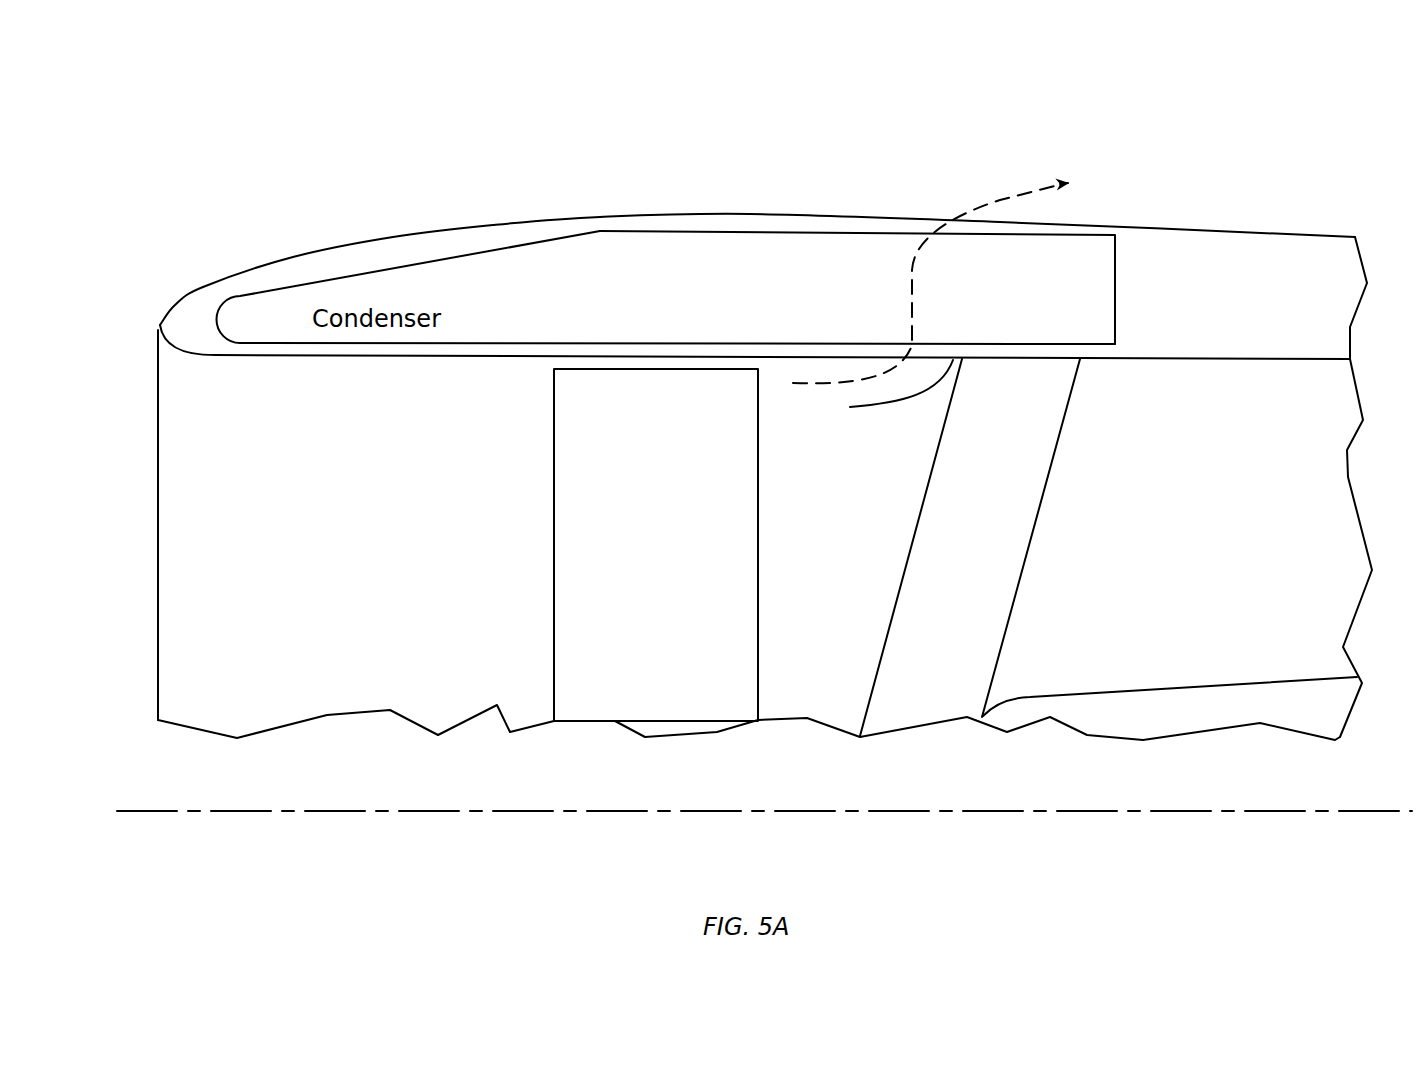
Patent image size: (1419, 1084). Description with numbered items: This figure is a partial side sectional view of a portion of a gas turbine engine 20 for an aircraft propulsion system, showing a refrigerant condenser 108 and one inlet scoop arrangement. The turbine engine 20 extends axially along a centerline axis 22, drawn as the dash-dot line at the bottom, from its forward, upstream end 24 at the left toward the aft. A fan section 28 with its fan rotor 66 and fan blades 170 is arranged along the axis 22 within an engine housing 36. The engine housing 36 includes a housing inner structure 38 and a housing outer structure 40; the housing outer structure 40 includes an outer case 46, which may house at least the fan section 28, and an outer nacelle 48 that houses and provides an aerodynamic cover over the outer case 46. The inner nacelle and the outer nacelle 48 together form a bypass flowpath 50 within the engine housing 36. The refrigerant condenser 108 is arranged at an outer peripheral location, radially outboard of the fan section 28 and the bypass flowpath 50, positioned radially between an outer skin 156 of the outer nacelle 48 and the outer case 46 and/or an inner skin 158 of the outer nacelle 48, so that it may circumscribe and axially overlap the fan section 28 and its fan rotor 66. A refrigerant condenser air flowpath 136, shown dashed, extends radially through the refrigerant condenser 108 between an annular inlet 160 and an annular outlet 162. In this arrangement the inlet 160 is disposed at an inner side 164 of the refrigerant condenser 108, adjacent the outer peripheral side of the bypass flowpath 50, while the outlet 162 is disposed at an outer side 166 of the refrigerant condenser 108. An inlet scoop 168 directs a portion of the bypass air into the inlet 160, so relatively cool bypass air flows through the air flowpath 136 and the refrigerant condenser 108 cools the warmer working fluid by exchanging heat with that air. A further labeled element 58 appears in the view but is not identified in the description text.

The gas turbine engine 20 is at (233, 130).
The centerline axis 22 is at (127, 812).
The forward, upstream end 24 is at (158, 325).
The fan section 28 is at (495, 497).
The engine housing 36 is at (1378, 153).
The housing inner structure 38 is at (1313, 230).
The housing outer structure 40 is at (1327, 670).
The outer case 46 is at (637, 343).
The outer nacelle 48 is at (1230, 222).
The bypass flowpath 50 is at (1161, 570).
The inlet 58 is at (168, 548).
The fan rotor 66 is at (542, 618).
The refrigerant condenser 108 is at (538, 236).
The refrigerant condenser air flowpath 136 is at (912, 315).
The outer skin 156 is at (840, 218).
The inner skin 158 is at (1108, 360).
The inlet 160 is at (795, 350).
The outlet 162 is at (905, 234).
The inner side 164 is at (520, 345).
The outer side 166 is at (645, 232).
The inlet scoop 168 is at (880, 408).
The fan blades 170 is at (676, 484).